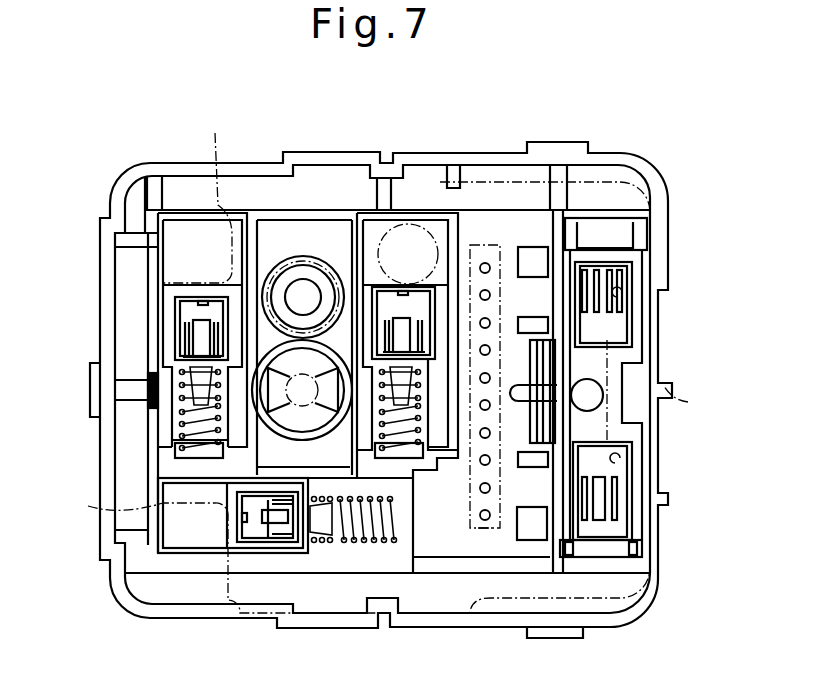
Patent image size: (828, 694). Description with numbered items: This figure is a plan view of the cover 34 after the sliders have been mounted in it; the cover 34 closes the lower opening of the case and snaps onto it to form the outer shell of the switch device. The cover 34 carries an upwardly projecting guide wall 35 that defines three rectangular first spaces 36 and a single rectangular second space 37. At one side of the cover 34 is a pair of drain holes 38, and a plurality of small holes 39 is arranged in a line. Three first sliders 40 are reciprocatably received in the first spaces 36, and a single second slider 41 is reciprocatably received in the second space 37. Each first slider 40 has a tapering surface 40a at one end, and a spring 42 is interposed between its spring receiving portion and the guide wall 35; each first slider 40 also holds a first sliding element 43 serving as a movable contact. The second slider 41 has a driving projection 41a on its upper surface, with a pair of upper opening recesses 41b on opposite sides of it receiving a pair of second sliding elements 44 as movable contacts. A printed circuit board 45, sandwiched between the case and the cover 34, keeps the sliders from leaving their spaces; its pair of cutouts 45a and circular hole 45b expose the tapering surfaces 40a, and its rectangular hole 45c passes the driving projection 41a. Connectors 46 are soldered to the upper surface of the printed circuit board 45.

The cover 34 is at (664, 160).
The guide wall 35 is at (262, 236).
The first spaces 36 is at (335, 546).
The second space 37 is at (622, 226).
The drain holes 38 is at (132, 317).
The small holes 39 is at (484, 262).
The first sliders 40 is at (168, 350).
The tapering surface 40a is at (176, 232).
The second slider 41 is at (628, 354).
The driving projection 41a is at (600, 400).
The upper opening recesses 41b is at (624, 294).
The spring 42 is at (378, 528).
The first sliding element 43 is at (178, 307).
The second sliding elements 44 is at (615, 322).
The printed circuit board 45 is at (592, 182).
The cutouts 45a is at (212, 359).
The circular hole 45b is at (384, 228).
The rectangular hole 45c is at (696, 401).
The connectors 46 is at (492, 532).